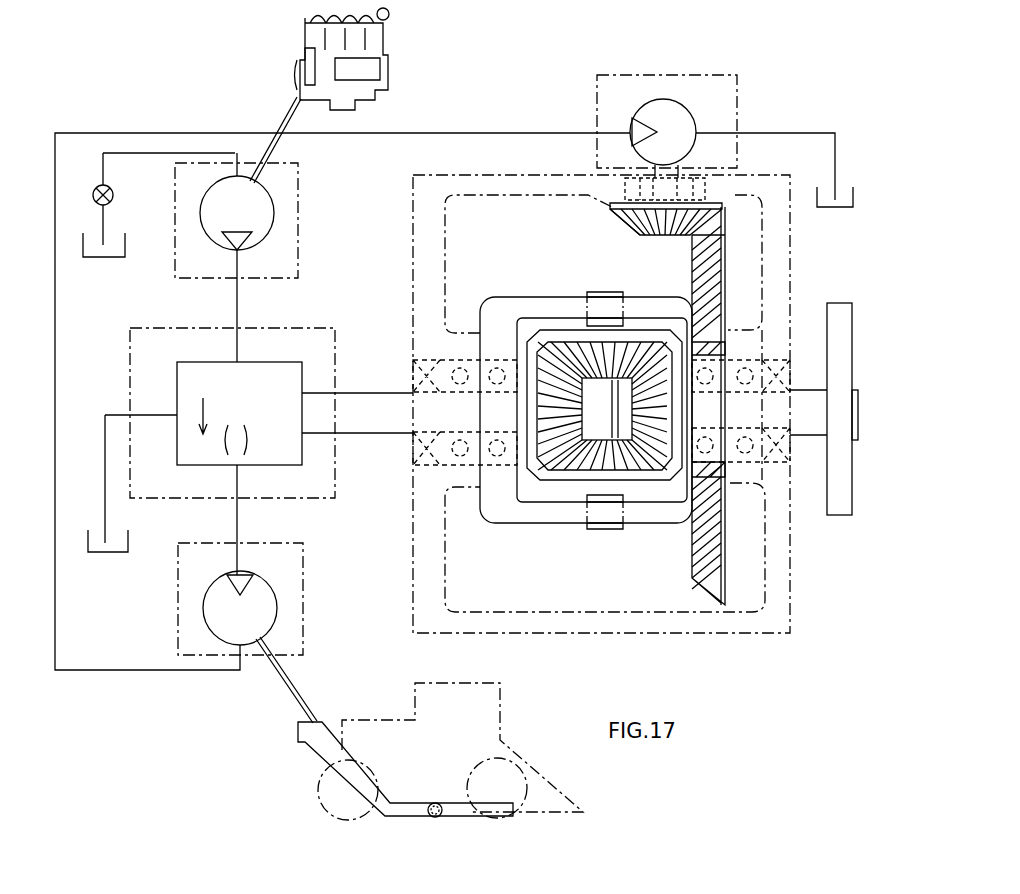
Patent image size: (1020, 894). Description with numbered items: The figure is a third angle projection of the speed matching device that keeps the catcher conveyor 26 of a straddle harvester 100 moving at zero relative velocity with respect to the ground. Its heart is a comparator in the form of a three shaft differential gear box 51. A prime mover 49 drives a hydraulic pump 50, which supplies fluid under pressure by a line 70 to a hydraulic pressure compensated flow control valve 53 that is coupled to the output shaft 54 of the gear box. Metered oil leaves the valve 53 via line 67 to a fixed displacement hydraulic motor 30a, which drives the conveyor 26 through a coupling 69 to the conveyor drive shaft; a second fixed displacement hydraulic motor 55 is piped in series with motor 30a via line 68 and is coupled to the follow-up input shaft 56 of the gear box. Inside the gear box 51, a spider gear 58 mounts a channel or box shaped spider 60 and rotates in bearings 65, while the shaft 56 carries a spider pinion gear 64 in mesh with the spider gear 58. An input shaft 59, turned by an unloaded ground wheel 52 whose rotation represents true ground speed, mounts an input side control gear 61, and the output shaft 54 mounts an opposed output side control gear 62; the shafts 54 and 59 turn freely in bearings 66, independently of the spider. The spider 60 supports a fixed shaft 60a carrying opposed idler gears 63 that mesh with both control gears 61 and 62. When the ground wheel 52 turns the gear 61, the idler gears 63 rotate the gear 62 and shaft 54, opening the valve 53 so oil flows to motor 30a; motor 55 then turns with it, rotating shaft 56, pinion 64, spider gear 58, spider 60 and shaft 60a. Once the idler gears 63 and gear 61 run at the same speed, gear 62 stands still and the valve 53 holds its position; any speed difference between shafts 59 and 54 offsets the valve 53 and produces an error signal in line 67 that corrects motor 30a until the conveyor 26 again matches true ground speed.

The prime mover 49 is at (385, 55).
The hydraulic pump 50 is at (298, 230).
The line 70 is at (240, 303).
The hydraulic pressure compensated flow control valve 53 is at (305, 342).
The output shaft 54 is at (345, 407).
The bearings 65 is at (440, 457).
The bearings 66 is at (495, 465).
The line 67 is at (240, 521).
The line 68 is at (58, 615).
The hydraulic motor 30a is at (305, 622).
The coupling 69 is at (295, 688).
The catcher conveyor 26 is at (315, 722).
The harvester 100 is at (478, 731).
The unloaded ground wheel 52 is at (433, 800).
The fixed displacement hydraulic motor 55 is at (715, 90).
The shaft 56 is at (690, 168).
The differential gear box 51 is at (634, 647).
The spider pinion gear 64 is at (632, 222).
The spider gear 58 is at (725, 270).
The shaft 59 is at (806, 392).
The spider 60 is at (558, 308).
The fixed shaft 60a is at (612, 297).
The idler gears 63 is at (650, 318).
The input side control gear 61 is at (660, 435).
The output side control gear 62 is at (588, 480).